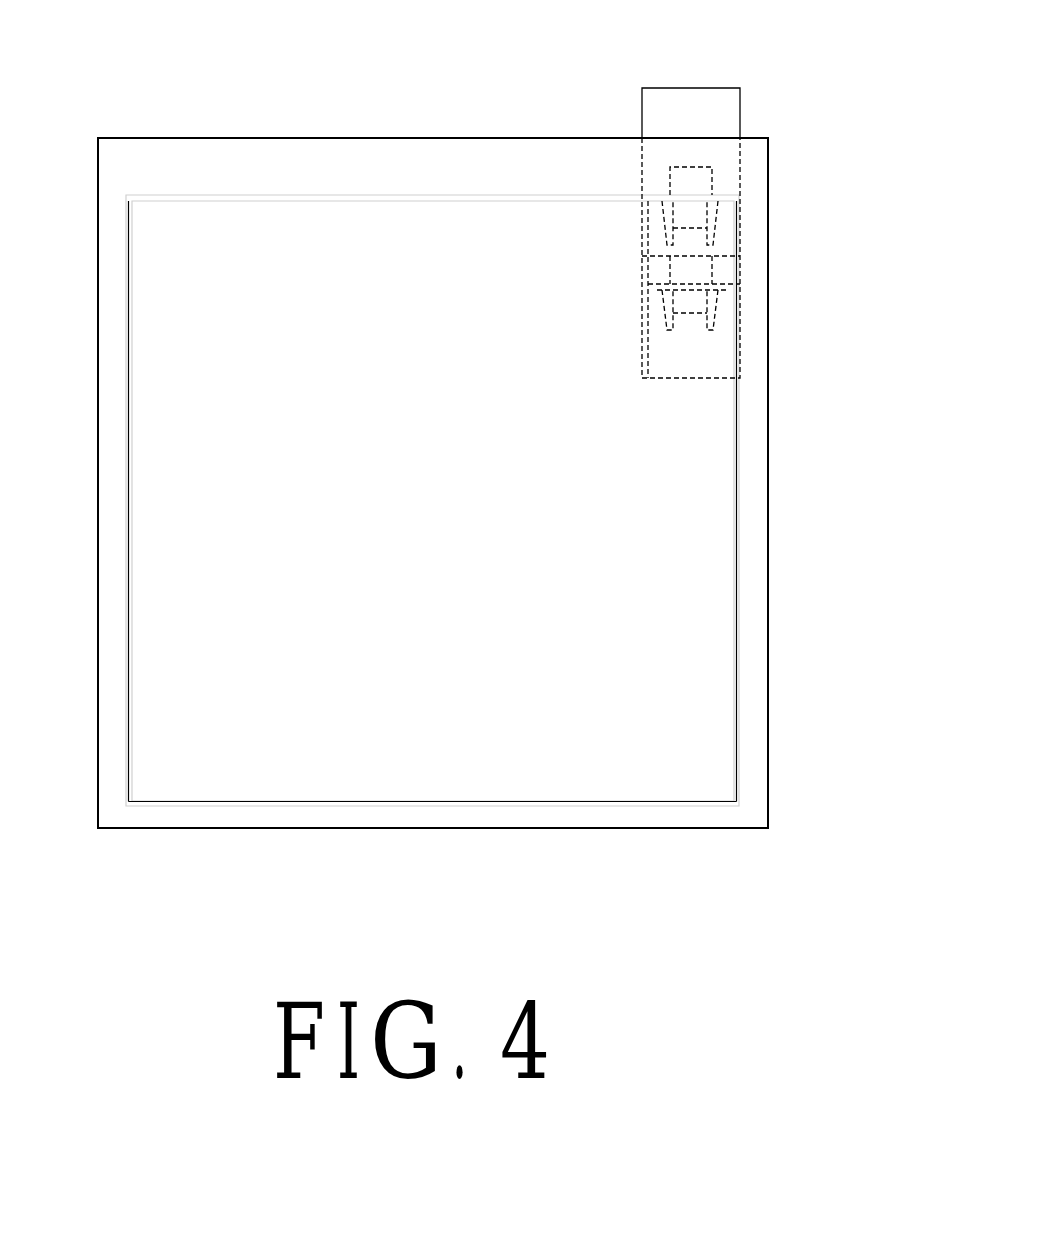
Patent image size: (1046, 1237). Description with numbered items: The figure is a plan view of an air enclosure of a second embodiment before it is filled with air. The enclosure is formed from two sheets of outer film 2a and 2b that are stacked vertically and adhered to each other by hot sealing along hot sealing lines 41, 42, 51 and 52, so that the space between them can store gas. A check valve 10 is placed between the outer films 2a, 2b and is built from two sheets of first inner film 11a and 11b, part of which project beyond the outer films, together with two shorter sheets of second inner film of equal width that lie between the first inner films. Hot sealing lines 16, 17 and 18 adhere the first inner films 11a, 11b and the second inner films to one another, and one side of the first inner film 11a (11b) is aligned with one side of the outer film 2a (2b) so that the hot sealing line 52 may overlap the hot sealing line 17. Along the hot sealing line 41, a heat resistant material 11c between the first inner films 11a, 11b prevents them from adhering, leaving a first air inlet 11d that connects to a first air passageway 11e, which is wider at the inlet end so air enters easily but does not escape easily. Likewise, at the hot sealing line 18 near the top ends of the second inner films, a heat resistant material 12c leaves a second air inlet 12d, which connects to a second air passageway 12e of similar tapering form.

The outer film 2a is at (173, 148).
The outer film 2b is at (433, 483).
The check valve 10 is at (637, 65).
The first inner film 11a is at (727, 92).
The first inner film 11b is at (691, 113).
The heat resistant material 11c is at (688, 187).
The first air inlet 11d is at (712, 174).
The first air passageway 11e is at (696, 237).
The heat resistant material 12c is at (672, 268).
The second air inlet 12d is at (697, 273).
The second air passageway 12e is at (692, 334).
The hot sealing line 16 is at (647, 218).
The hot sealing line 17 is at (740, 207).
The hot sealing line 18 is at (657, 290).
The hot sealing line 41 is at (337, 197).
The hot sealing line 42 is at (180, 804).
The hot sealing line 51 is at (128, 553).
The hot sealing line 52 is at (735, 555).